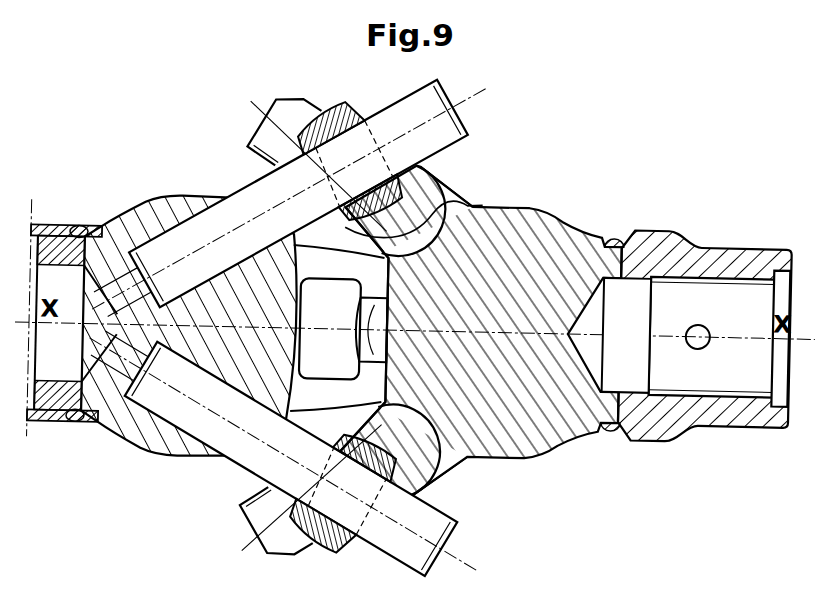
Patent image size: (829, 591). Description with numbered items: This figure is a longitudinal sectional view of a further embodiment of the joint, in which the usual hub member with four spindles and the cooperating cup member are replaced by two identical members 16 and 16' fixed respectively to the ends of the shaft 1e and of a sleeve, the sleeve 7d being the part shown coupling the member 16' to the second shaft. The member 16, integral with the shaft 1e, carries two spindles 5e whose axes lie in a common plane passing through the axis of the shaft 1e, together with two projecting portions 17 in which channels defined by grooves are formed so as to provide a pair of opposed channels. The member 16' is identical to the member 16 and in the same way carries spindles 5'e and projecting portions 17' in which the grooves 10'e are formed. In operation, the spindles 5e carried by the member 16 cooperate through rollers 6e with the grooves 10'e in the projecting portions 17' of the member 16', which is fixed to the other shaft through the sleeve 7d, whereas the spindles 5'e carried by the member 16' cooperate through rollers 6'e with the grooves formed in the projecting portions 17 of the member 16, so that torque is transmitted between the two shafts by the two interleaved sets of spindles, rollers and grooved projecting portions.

The shaft 1e is at (45, 413).
The member 16 is at (165, 346).
The member 16' is at (482, 336).
The spindles 5e is at (233, 209).
The spindles 5'e is at (339, 329).
The rollers 6e is at (348, 103).
The rollers 6'e is at (353, 327).
The grooves 10'e is at (280, 314).
The projecting portions 17 is at (437, 202).
The projecting portions 17' is at (315, 314).
The sleeve 7d is at (690, 408).